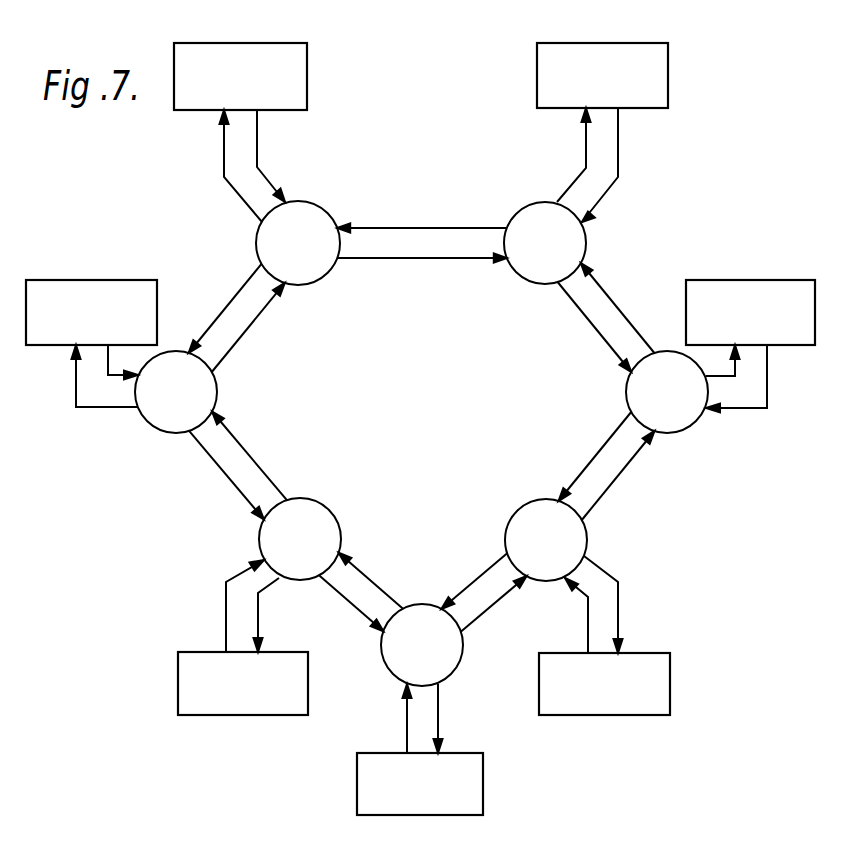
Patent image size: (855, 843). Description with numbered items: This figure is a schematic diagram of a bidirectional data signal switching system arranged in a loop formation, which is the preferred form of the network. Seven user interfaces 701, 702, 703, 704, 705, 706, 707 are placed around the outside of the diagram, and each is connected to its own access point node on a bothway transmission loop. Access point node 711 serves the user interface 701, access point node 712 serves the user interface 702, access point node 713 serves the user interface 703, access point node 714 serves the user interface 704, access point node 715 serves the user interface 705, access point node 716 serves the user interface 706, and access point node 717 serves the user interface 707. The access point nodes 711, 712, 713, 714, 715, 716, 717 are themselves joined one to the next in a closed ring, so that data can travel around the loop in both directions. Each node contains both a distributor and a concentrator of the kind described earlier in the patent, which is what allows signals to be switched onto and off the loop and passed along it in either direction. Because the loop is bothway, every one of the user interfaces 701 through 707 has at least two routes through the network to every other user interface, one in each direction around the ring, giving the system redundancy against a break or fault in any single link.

The user interface 701 is at (307, 43).
The user interface 702 is at (668, 43).
The user interface 703 is at (757, 280).
The user interface 704 is at (670, 653).
The user interface 705 is at (483, 787).
The user interface 706 is at (180, 714).
The user interface 707 is at (160, 279).
The access point node 711 is at (327, 203).
The access point node 712 is at (585, 238).
The access point node 713 is at (627, 392).
The access point node 714 is at (587, 528).
The access point node 715 is at (463, 660).
The access point node 716 is at (333, 512).
The access point node 717 is at (217, 384).